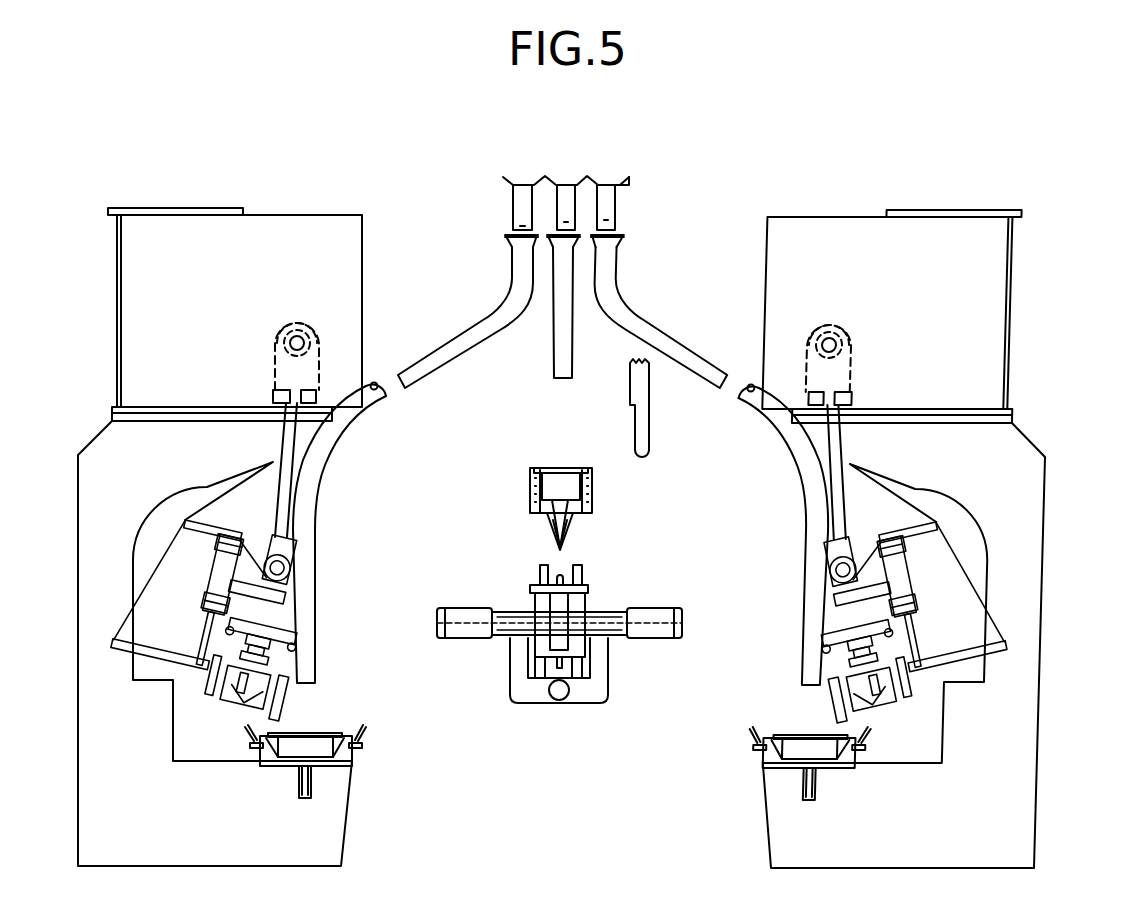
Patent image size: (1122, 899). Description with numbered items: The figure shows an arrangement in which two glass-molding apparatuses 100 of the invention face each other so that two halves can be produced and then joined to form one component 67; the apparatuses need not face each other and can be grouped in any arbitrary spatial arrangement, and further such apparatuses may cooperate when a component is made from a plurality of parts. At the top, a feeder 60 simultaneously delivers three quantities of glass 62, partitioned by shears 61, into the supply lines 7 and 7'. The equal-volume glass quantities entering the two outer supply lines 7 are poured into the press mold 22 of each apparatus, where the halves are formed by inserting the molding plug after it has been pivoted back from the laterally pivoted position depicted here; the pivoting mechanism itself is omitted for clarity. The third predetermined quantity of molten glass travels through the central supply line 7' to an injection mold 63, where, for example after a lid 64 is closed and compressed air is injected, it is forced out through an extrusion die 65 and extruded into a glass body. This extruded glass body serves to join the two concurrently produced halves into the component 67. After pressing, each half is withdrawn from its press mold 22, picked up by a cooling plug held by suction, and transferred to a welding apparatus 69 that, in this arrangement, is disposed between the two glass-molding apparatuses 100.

The glass-molding apparatus 100 is at (88, 355).
The press mold 22 is at (372, 748).
The supply line 7 is at (564, 311).
The supply line 7' is at (589, 306).
The feeder 60 is at (602, 160).
The shears 61 is at (630, 197).
The quantities of glass 62 is at (515, 225).
The injection mold 63 is at (593, 483).
The lid 64 is at (641, 422).
The extrusion die 65 is at (563, 547).
The component 67 is at (570, 610).
The welding apparatus 69 is at (616, 720).